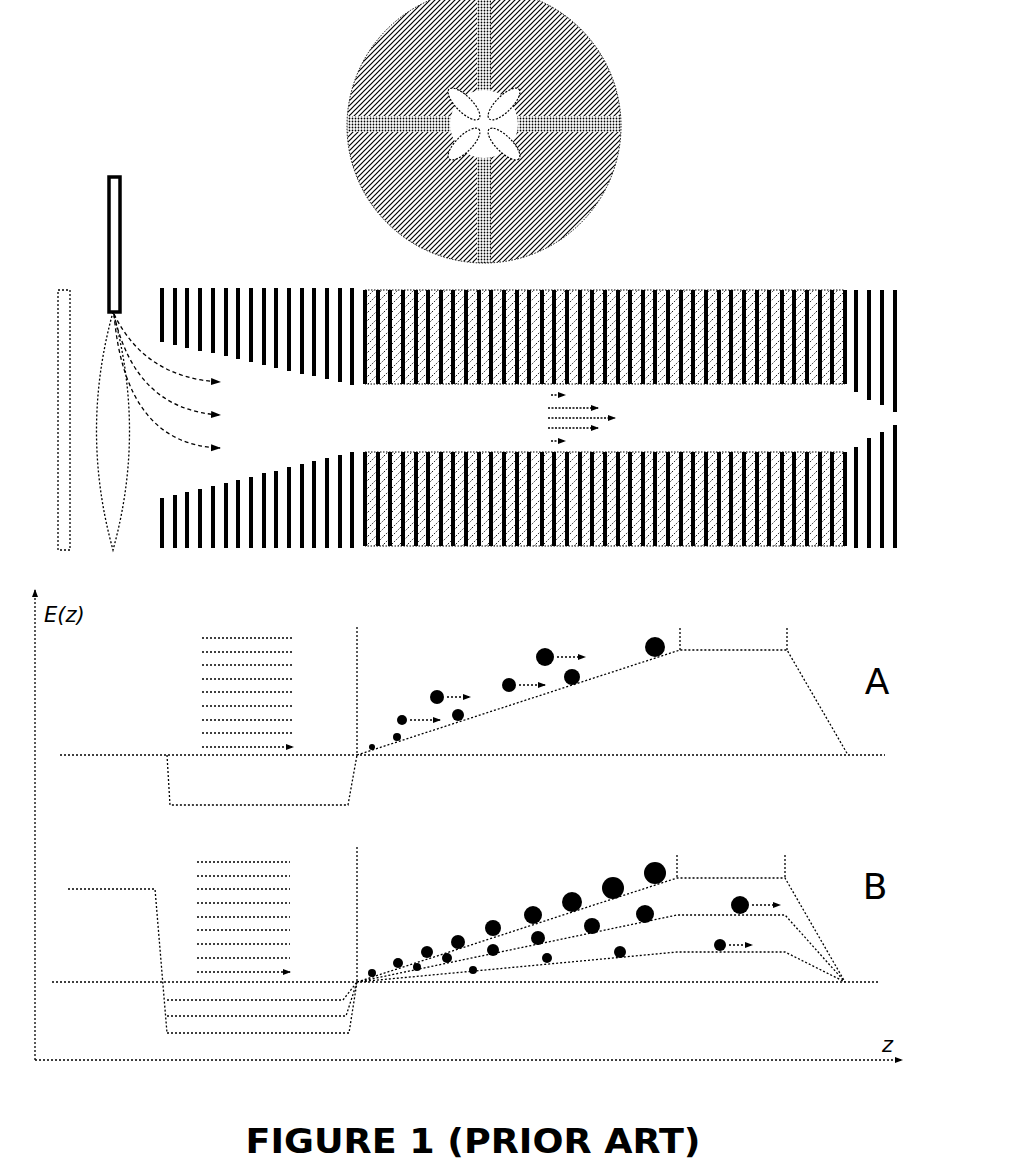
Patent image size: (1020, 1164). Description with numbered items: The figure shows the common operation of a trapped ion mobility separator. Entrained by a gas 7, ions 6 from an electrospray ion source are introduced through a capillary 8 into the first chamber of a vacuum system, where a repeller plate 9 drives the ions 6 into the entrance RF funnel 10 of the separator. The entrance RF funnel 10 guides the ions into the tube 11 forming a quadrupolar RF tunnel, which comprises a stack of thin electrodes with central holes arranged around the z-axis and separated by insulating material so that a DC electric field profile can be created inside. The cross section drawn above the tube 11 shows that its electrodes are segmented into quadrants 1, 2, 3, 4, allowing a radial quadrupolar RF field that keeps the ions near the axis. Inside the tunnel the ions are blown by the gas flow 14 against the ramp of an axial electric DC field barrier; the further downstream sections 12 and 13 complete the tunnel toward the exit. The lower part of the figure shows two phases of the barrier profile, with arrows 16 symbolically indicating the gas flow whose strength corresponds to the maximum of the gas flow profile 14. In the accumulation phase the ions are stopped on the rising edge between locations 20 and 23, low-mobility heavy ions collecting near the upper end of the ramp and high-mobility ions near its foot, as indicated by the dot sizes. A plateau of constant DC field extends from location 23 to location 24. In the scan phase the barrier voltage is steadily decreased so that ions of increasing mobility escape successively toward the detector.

The quadrant 1 is at (408, 58).
The quadrant 2 is at (561, 58).
The quadrant 3 is at (408, 202).
The quadrant 4 is at (561, 202).
The ions 6 is at (167, 381).
The gas 7 is at (113, 431).
The capillary 8 is at (125, 244).
The repeller plate 9 is at (64, 405).
The entrance RF funnel 10 is at (164, 277).
The tube (quadrupolar RF tunnel) 11 is at (368, 277).
The exit rod section 12 is at (884, 277).
The exit aperture electrode 13 is at (895, 285).
The gas flow 14 is at (566, 418).
The arrows 16 is at (245, 805).
The location 20 is at (358, 793).
The location 23 is at (679, 741).
The location 24 is at (786, 741).